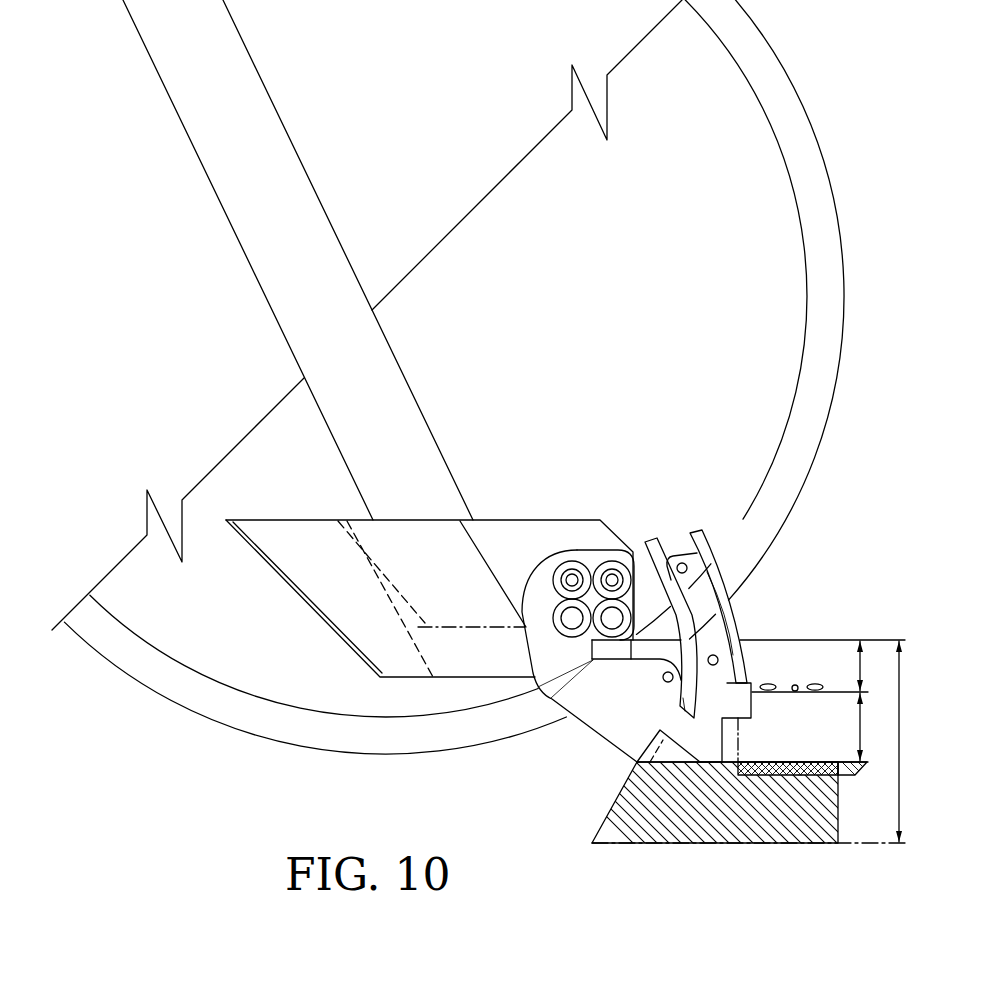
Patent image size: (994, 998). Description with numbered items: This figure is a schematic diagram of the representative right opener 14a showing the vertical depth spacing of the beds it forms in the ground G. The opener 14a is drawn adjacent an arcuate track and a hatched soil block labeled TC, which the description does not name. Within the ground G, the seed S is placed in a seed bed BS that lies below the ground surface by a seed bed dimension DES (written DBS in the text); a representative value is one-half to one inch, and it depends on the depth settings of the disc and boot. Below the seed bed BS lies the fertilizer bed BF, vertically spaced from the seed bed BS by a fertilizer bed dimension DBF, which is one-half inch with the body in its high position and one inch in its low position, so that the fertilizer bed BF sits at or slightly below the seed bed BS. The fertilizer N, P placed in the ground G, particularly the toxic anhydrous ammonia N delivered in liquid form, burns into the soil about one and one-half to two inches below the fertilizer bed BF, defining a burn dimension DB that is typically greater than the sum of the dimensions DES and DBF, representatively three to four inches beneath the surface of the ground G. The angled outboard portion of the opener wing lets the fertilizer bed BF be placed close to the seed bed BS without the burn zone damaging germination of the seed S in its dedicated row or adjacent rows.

The right opener 14a is at (421, 229).
The tool carrier block TC is at (598, 813).
The fertilizer bed BF is at (760, 750).
The seed bed BS is at (783, 670).
The ground G is at (800, 640).
The seed S is at (815, 683).
The fertilizer P is at (780, 762).
The anhydrous ammonia N is at (800, 778).
The seed bed dimension DES is at (847, 666).
The fertilizer bed dimension DBF is at (847, 727).
The burn dimension DB is at (888, 741).